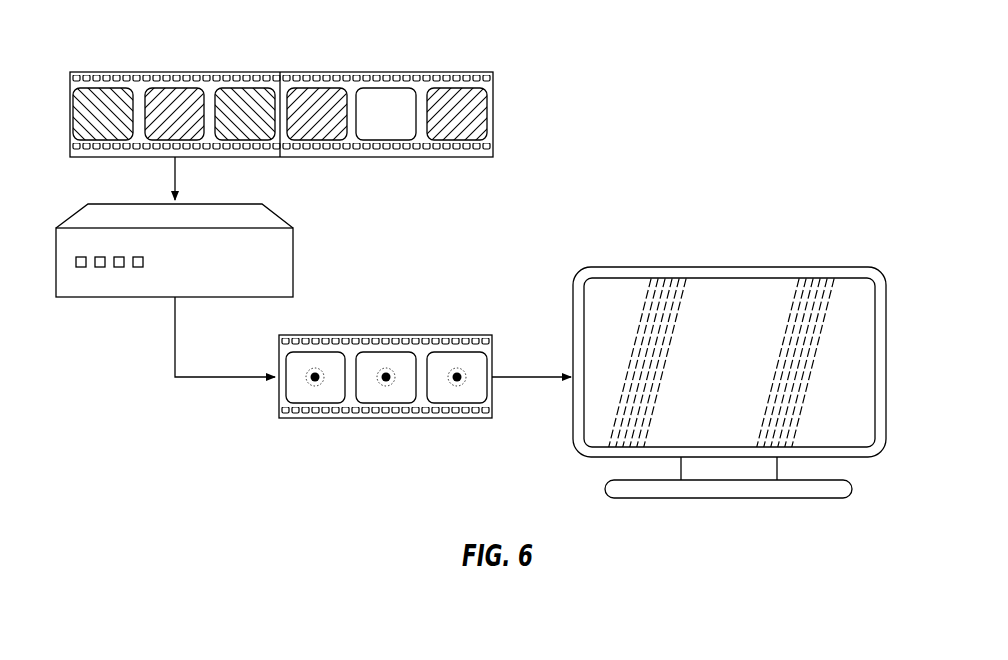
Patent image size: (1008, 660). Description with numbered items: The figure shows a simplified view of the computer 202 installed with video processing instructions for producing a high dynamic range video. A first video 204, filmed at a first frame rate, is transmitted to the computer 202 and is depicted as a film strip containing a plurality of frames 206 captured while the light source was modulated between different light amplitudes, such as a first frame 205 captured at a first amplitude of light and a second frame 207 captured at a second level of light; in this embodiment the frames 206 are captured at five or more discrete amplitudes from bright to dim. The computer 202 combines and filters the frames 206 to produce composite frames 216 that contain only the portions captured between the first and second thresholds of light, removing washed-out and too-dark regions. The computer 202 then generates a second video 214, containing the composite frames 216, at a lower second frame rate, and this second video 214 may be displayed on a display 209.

The computer 202 is at (295, 268).
The first video 204 is at (524, 115).
The first frame 205 is at (90, 118).
The frames 206 is at (160, 102).
The second frame 207 is at (178, 100).
The display 209 is at (718, 498).
The second video 214 is at (251, 425).
The composite frames 216 is at (303, 397).